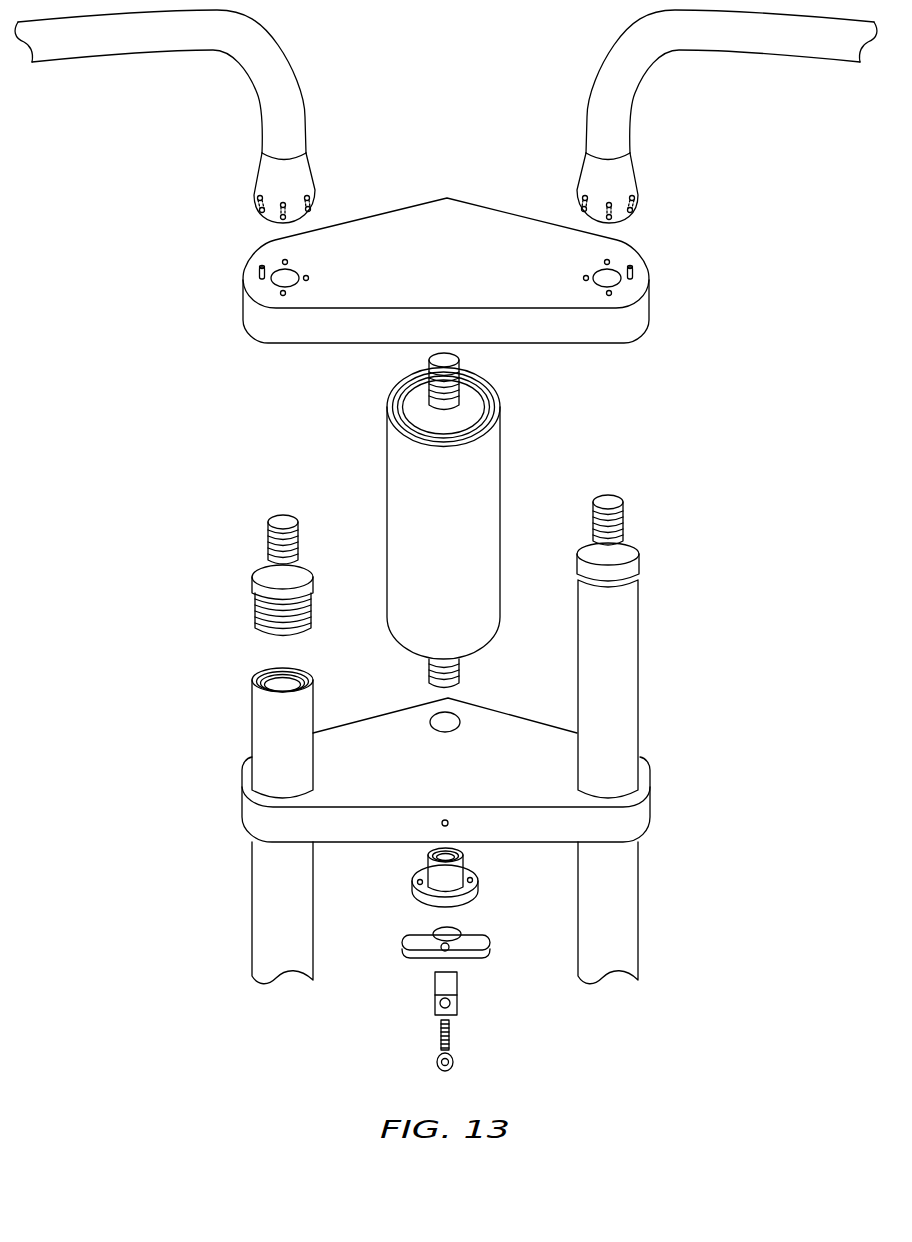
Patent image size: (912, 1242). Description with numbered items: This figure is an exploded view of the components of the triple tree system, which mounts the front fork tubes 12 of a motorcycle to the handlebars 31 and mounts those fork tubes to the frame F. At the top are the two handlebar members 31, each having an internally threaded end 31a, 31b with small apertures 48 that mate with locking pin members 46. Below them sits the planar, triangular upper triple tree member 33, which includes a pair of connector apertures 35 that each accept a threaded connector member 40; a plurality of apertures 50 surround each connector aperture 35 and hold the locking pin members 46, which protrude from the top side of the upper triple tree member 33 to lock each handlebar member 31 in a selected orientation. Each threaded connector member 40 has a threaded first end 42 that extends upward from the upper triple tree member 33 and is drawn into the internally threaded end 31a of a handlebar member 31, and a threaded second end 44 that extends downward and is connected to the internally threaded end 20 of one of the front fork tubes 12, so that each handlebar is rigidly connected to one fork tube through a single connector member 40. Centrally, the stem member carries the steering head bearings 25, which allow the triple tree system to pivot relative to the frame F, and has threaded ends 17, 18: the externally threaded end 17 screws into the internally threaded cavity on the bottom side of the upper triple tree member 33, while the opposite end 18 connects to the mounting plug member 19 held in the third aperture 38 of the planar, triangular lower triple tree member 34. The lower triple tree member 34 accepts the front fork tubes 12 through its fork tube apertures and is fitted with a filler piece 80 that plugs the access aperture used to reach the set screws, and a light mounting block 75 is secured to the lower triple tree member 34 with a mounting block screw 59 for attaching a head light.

The handlebar member 31 is at (446, 85).
The internally threaded end of handlebar member 31a is at (348, 181).
The handlebar end portion 31b is at (547, 181).
The fastener holes 48 is at (304, 196).
The upper triple tree member 33 is at (446, 301).
The connector aperture 35 is at (443, 246).
The locking pin member 46 is at (446, 260).
The apertures 50 is at (304, 282).
The frame F is at (486, 514).
The steering head bearings 25 is at (488, 407).
The externally threaded end of stem member 17 is at (492, 380).
The opposite end of stem member 18 is at (496, 663).
The third aperture 38 is at (445, 699).
The front fork tube 12 is at (440, 782).
The internally threaded end of front fork tube 20 is at (225, 661).
The lower triple tree member 34 is at (440, 799).
The threaded first end of connector member 42 is at (439, 509).
The threaded connector member 40 is at (442, 554).
The threaded second end of connector member 44 is at (221, 598).
The mounting plug member 19 is at (490, 898).
The filler piece 80 is at (490, 971).
The light mounting block 75 is at (396, 1008).
The mounting block screw 59 is at (489, 1051).